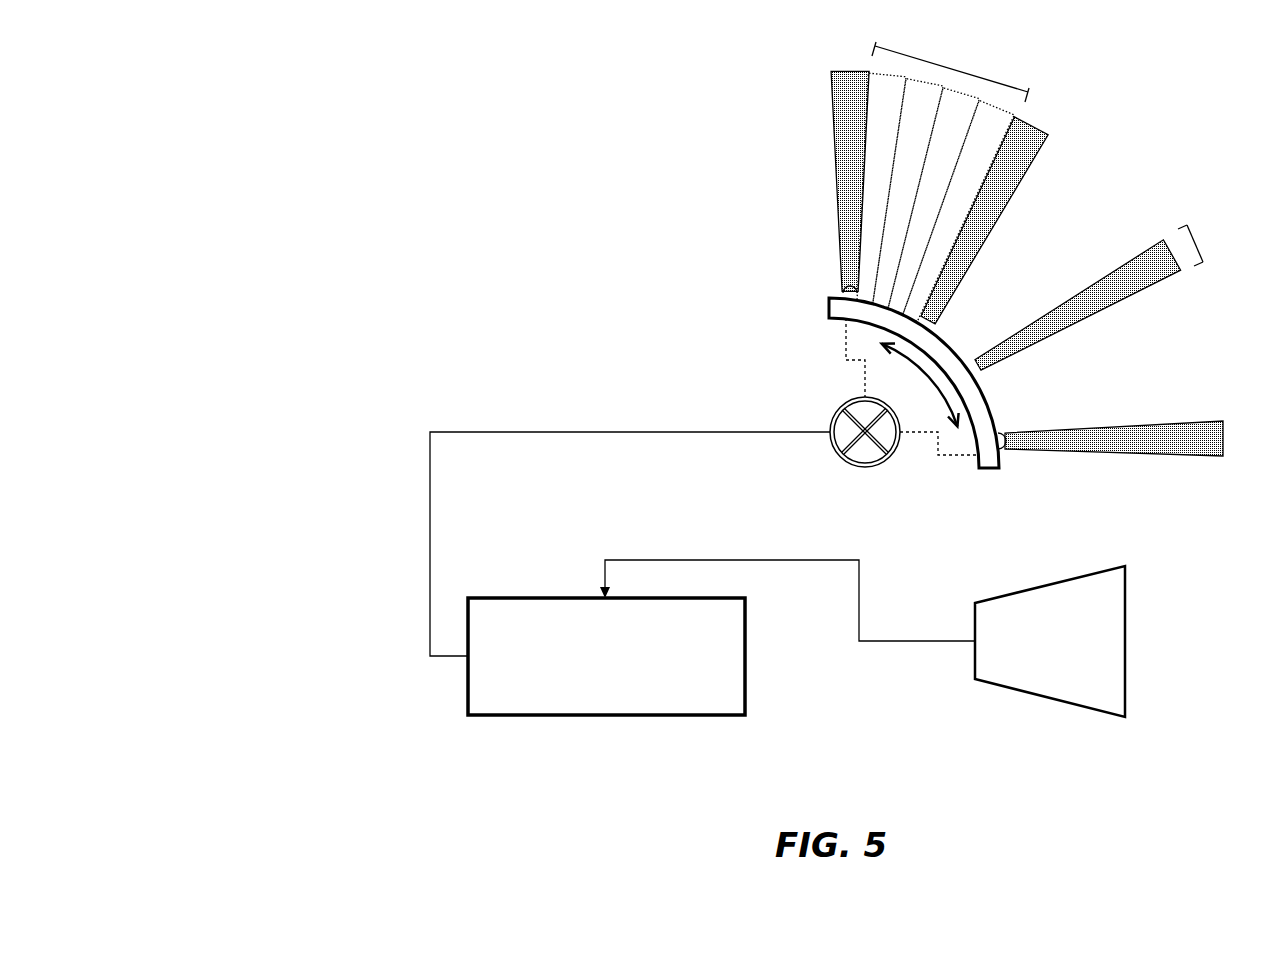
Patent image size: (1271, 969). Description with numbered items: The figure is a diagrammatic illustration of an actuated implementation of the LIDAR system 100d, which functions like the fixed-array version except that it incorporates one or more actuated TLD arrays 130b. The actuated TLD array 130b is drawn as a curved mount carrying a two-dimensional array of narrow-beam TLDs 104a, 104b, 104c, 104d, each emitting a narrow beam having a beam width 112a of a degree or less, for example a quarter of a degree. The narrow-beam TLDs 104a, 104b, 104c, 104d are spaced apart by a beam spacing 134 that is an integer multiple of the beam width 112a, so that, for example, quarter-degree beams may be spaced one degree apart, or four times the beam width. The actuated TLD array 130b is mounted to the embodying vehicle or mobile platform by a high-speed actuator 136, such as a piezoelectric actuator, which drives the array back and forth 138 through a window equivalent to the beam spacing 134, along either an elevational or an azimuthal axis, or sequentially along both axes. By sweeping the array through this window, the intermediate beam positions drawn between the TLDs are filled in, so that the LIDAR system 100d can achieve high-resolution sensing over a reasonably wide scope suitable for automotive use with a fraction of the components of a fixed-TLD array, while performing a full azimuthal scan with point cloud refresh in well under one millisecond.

The LIDAR system 100d is at (386, 170).
The narrow-beam TLD 104a is at (845, 290).
The narrow-beam TLD 104b is at (940, 306).
The narrow-beam TLD 104c is at (989, 370).
The narrow-beam TLD 104d is at (1007, 452).
The beam width 112a is at (1200, 243).
The beam spacing 134 is at (965, 67).
The actuated TLD array 130b is at (826, 303).
The high-speed actuator 136 is at (866, 468).
The back and forth actuation 138 is at (935, 450).